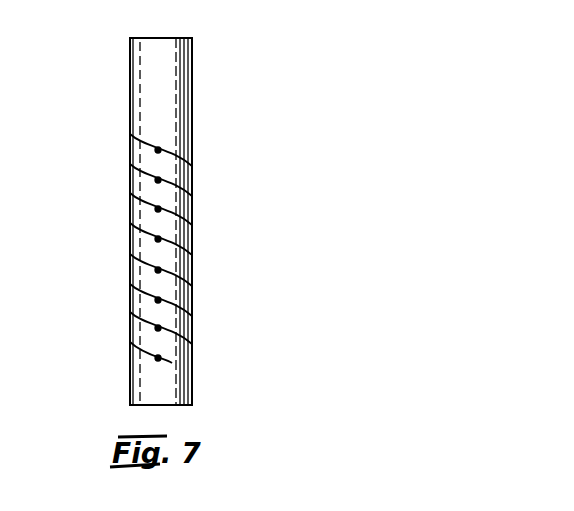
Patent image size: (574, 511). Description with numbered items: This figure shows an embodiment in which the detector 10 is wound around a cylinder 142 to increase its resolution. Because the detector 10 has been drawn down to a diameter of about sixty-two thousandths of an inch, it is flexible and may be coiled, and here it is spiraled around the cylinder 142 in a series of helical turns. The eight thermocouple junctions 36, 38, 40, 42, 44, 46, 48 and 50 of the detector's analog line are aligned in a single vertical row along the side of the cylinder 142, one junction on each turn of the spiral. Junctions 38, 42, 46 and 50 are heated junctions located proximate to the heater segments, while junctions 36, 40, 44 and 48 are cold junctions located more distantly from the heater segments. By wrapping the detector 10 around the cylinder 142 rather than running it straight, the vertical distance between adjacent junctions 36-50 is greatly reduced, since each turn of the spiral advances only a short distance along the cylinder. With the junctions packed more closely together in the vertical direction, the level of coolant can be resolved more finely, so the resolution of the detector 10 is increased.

The detector 10 is at (192, 156).
The cylinder 142 is at (171, 70).
The thermocouple junction 36 is at (158, 358).
The thermocouple junction 38 is at (158, 328).
The thermocouple junction 40 is at (158, 300).
The thermocouple junction 42 is at (158, 270).
The thermocouple junction 44 is at (158, 239).
The thermocouple junction 46 is at (158, 209).
The thermocouple junction 48 is at (158, 180).
The thermocouple junction 50 is at (158, 150).